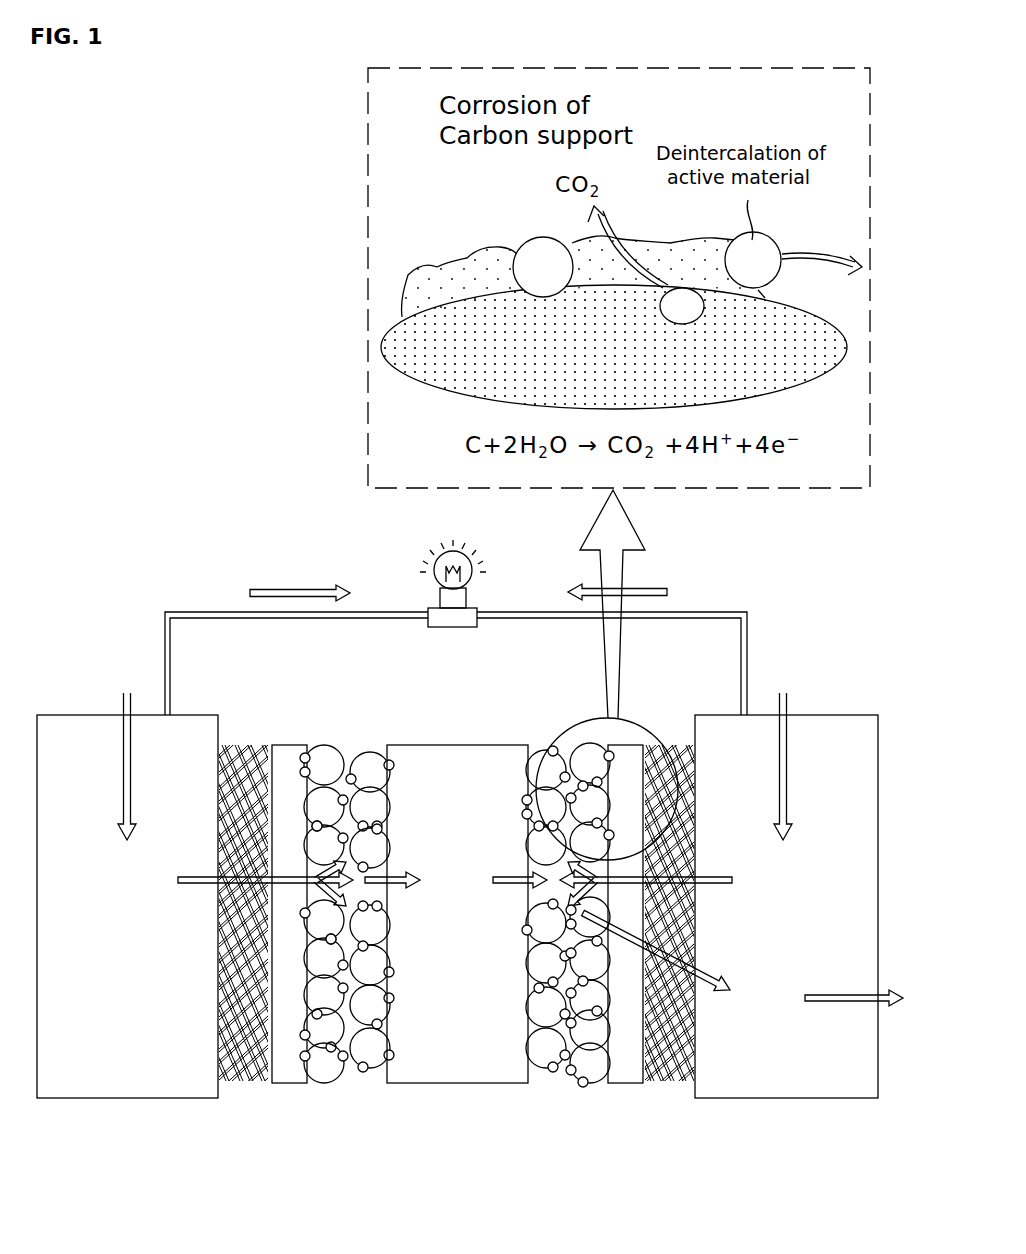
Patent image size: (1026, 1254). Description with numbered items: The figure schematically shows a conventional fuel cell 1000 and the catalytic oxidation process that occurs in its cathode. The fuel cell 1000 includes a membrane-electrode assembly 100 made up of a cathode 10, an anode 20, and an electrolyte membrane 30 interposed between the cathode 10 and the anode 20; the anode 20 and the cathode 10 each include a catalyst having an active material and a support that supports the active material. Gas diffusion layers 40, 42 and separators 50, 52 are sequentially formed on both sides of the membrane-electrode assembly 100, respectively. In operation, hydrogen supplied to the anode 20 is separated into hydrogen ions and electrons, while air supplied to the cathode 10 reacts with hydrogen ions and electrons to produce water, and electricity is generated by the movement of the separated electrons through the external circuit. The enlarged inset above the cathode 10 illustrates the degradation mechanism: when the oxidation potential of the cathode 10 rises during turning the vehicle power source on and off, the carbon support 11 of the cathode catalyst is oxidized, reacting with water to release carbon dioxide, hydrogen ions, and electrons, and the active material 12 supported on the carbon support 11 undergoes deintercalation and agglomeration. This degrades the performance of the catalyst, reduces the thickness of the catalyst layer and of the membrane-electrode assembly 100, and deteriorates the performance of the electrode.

The fuel cell 1000 is at (128, 532).
The membrane-electrode assembly 100 is at (457, 962).
The cathode 10 is at (582, 944).
The carbon support 11 is at (392, 348).
The active material 12 is at (417, 302).
The anode 20 is at (342, 1072).
The electrolyte membrane 30 is at (460, 1070).
The gas diffusion layer 40 is at (668, 1073).
The gas diffusion layer 42 is at (242, 1075).
The separator 50 is at (785, 1070).
The separator 52 is at (117, 1072).